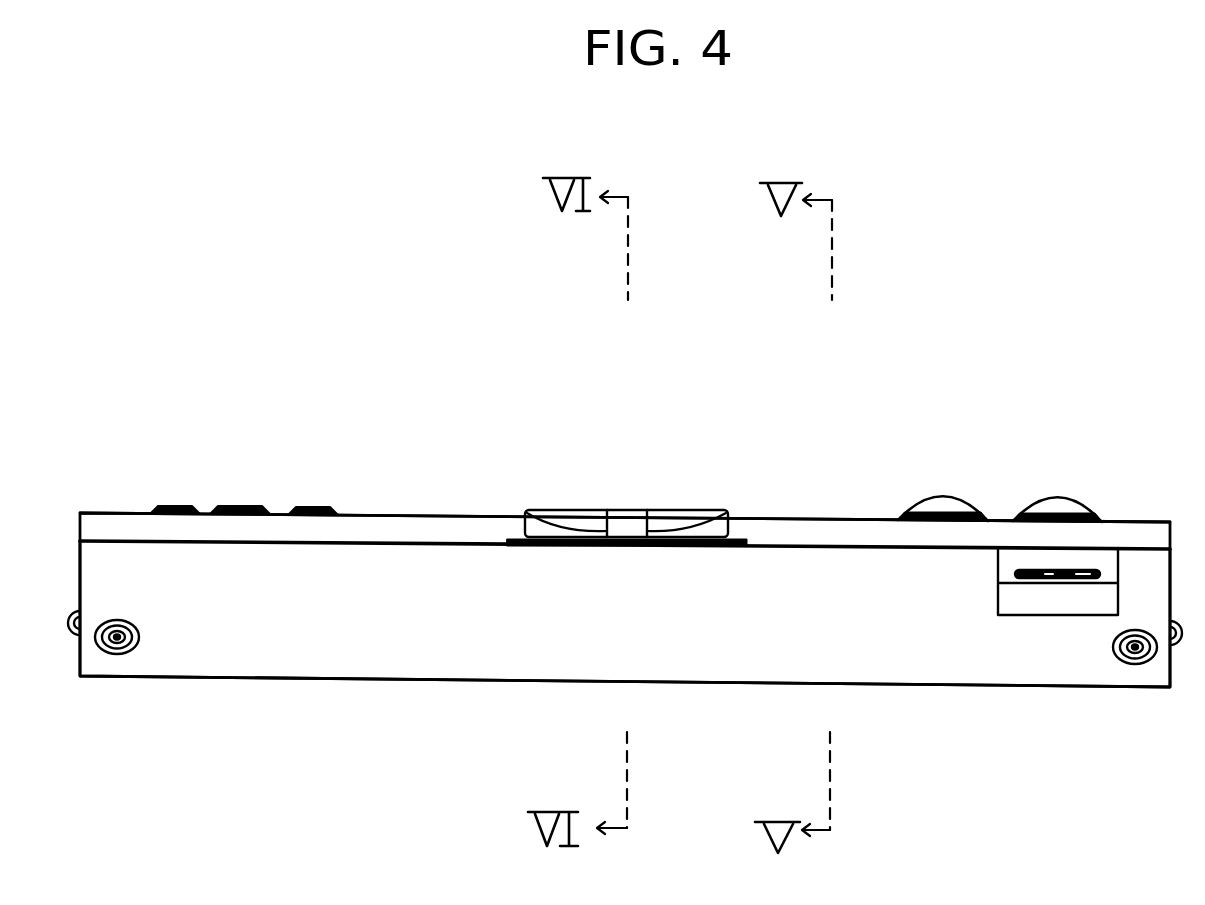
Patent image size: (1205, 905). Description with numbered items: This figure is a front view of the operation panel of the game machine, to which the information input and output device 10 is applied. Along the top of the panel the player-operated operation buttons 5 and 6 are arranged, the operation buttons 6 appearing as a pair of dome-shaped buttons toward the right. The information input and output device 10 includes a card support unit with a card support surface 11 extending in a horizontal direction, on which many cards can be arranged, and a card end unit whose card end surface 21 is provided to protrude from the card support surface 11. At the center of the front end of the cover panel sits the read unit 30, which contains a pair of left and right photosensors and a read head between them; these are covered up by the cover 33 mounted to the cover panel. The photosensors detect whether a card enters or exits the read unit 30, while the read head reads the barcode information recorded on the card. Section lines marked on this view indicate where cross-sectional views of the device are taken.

The operation button 5 is at (245, 505).
The operation button 6 is at (1058, 498).
The information input and output device 10 is at (505, 422).
The card support surface 11 is at (825, 546).
The card end surface 21 is at (438, 530).
The read unit 30 is at (667, 478).
The cover 33 is at (690, 511).